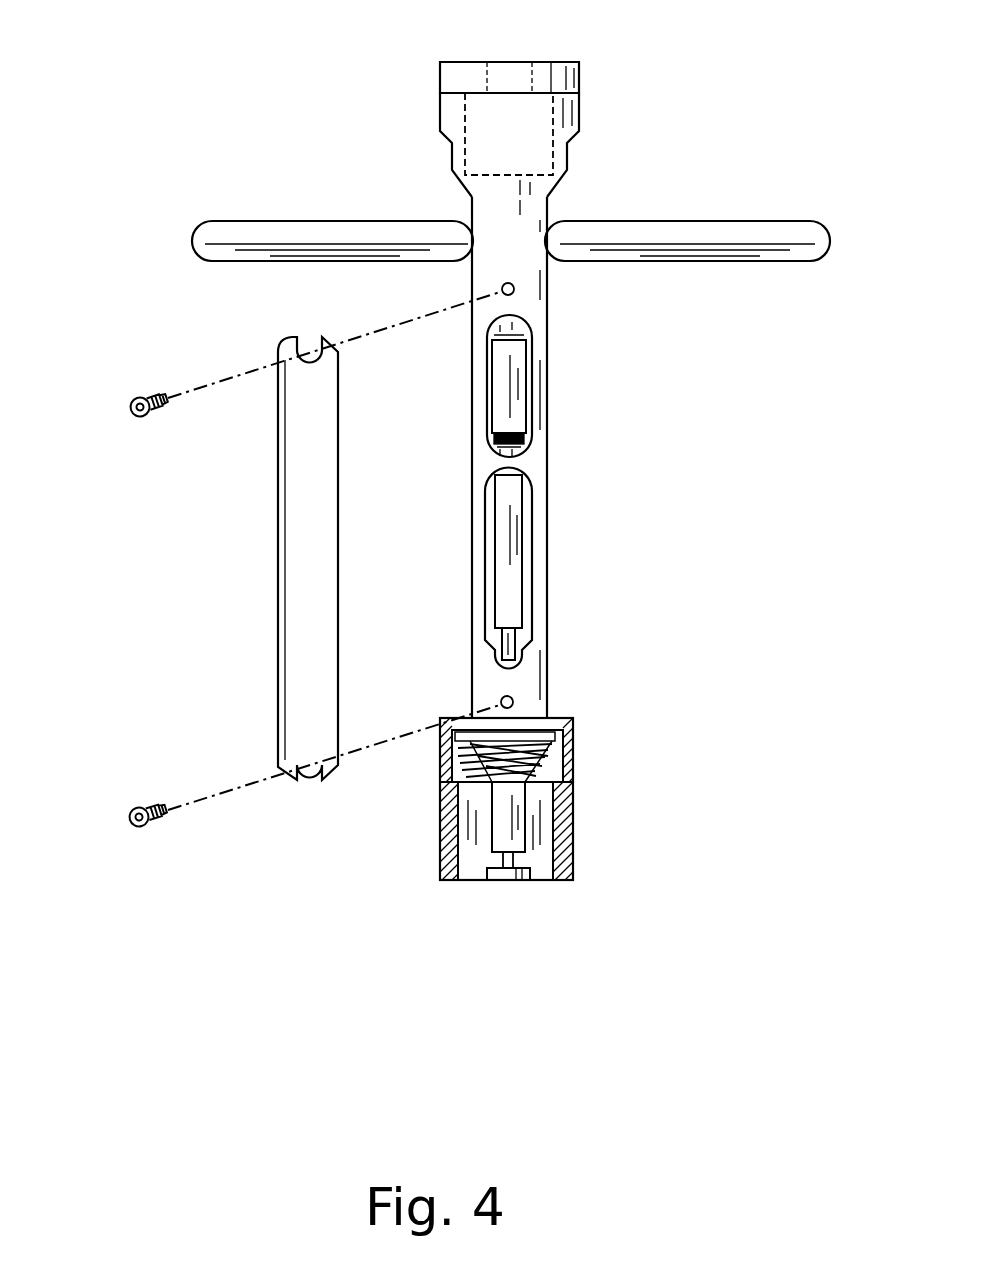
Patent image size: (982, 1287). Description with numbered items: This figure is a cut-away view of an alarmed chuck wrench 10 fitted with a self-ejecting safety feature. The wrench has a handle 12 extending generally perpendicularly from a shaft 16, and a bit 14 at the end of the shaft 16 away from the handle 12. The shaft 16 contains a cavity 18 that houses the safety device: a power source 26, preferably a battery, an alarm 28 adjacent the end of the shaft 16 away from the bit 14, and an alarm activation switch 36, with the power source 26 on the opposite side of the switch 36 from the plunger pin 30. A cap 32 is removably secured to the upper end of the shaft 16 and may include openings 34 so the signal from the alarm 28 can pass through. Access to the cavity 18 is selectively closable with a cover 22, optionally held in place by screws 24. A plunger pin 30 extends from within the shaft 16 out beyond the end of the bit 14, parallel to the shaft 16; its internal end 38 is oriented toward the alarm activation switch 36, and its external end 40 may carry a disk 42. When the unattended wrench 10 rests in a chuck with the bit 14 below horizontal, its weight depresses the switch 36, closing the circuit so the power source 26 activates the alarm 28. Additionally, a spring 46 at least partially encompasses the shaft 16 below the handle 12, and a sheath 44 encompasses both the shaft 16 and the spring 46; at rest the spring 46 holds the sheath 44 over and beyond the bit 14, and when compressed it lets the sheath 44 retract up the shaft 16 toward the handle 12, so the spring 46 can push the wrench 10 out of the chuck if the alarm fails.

The chuck wrench 10 is at (772, 522).
The handle 12 is at (683, 247).
The bit 14 is at (487, 820).
The shaft 16 is at (472, 445).
The cavity 18 is at (523, 610).
The cover 22 is at (298, 560).
The screws 24 is at (133, 415).
The power source 26 is at (517, 407).
The alarm 28 is at (495, 120).
The plunger pin 30 is at (500, 703).
The cap 32 is at (460, 80).
The openings 34 is at (510, 62).
The alarm activation switch 36 is at (507, 537).
The internal end 38 is at (503, 640).
The external end 40 is at (513, 858).
The disk 42 is at (530, 873).
The sheath 44 is at (447, 842).
The spring 46 is at (470, 782).